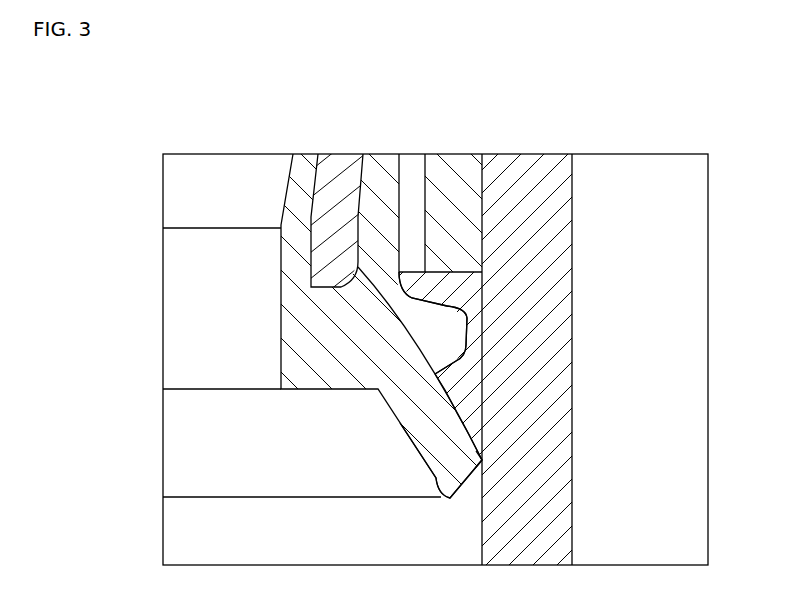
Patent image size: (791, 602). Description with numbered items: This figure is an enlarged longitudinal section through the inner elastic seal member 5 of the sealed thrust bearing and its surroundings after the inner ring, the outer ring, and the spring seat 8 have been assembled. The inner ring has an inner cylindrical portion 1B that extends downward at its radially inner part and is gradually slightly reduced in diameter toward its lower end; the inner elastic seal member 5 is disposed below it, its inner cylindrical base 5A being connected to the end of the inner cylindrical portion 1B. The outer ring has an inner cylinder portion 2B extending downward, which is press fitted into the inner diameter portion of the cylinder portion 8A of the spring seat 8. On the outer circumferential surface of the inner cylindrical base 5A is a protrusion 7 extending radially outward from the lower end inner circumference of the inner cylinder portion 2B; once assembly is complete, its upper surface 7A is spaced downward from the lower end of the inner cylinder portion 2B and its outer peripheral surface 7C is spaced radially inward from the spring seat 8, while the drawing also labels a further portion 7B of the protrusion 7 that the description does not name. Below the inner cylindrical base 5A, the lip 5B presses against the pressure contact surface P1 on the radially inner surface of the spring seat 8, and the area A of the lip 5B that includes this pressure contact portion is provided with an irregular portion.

The inner cylindrical portion 1B is at (342, 187).
The inner cylinder portion 2B is at (449, 183).
The inner elastic seal member 5 is at (270, 344).
The inner cylindrical base 5A is at (302, 300).
The lip 5B is at (413, 445).
The protrusion 7 is at (443, 382).
The upper surface 7A is at (447, 304).
The outer peripheral surface 7C is at (467, 330).
The lower surface of seal lip 7B is at (457, 358).
The spring seat 8 is at (588, 233).
The cylinder portion 8A is at (553, 188).
The area A is at (482, 439).
The pressure contact surface P1 is at (483, 460).